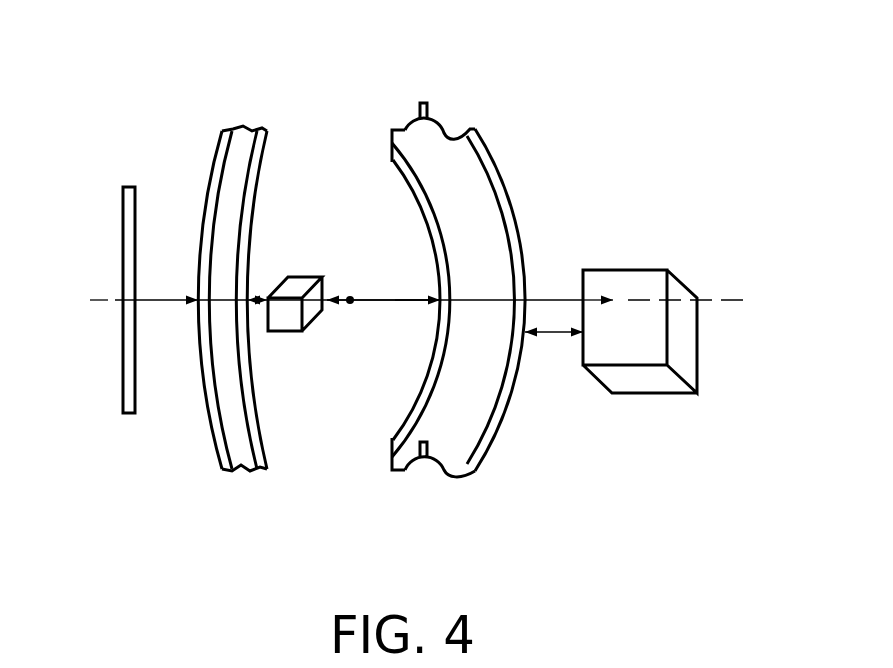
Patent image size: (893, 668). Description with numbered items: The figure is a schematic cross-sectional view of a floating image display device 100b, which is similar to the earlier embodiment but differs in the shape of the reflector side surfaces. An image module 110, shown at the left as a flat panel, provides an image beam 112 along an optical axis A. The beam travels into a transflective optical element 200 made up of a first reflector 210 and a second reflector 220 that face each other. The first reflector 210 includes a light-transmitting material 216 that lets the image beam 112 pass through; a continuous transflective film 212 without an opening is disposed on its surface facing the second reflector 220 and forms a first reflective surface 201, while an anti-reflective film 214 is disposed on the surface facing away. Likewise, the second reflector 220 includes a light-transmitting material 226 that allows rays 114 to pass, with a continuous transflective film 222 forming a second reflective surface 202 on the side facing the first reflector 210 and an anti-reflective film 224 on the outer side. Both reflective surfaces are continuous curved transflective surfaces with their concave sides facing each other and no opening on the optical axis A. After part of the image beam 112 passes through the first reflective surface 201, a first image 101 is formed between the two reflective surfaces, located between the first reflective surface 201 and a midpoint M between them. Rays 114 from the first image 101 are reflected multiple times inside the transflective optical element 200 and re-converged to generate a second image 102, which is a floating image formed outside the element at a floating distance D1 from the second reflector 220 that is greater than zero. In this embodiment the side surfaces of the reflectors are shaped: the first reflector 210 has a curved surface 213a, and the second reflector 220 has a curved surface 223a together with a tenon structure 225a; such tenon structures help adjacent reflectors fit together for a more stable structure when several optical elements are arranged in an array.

The floating image display device 100b is at (764, 572).
The transflective optical element 200 is at (332, 92).
The image module 110 is at (128, 413).
The image beam 112 is at (167, 298).
The first reflector 210 is at (241, 300).
The light-transmitting material 216 is at (192, 275).
The anti-reflective film 214 is at (207, 323).
The transflective film 212 is at (282, 274).
The first reflective surface 201 is at (263, 157).
The curved surface 213a is at (242, 473).
The first image 101 is at (288, 325).
The midpoint M is at (350, 297).
The optical axis A is at (408, 298).
The rays 114 is at (378, 302).
The floating distance D1 is at (554, 352).
The second image 102 is at (628, 350).
The second reflector 220 is at (441, 286).
The second reflective surface 202 is at (394, 312).
The transflective film 222 is at (430, 403).
The anti-reflective film 224 is at (500, 422).
The curved surface 223a is at (444, 120).
The tenon structure 225a is at (420, 104).
The light-transmitting material 226 is at (456, 460).